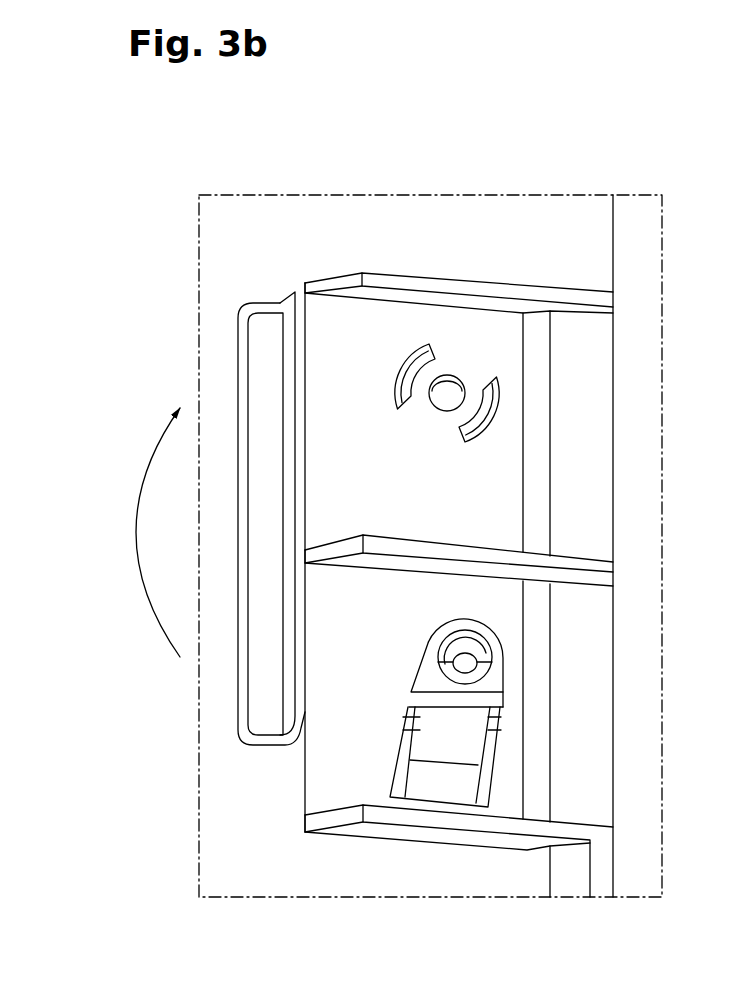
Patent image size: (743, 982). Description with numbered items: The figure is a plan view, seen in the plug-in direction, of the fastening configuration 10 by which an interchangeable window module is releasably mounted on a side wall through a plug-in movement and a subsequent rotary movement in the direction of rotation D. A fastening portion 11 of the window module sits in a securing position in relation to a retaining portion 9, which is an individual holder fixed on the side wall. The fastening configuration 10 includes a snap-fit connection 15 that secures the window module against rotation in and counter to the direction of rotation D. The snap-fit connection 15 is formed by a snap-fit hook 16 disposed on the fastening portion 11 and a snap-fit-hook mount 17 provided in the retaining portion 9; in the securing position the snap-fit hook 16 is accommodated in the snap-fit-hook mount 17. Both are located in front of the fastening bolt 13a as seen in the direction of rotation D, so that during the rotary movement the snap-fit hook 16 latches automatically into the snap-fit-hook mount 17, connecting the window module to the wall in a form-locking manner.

The retaining portion 9 is at (277, 403).
The fastening configuration 10 is at (342, 257).
The fastening portion 11 is at (490, 505).
The fastening bolt 13a is at (464, 382).
The snap-fit connection 15 is at (504, 672).
The snap-fit hook 16 is at (453, 743).
The snap-fit-hook mount 17 is at (473, 643).
The direction of rotation D is at (138, 530).